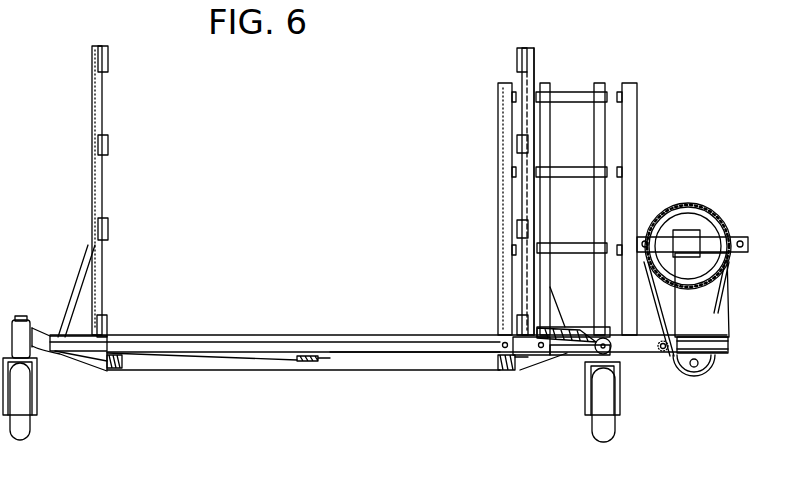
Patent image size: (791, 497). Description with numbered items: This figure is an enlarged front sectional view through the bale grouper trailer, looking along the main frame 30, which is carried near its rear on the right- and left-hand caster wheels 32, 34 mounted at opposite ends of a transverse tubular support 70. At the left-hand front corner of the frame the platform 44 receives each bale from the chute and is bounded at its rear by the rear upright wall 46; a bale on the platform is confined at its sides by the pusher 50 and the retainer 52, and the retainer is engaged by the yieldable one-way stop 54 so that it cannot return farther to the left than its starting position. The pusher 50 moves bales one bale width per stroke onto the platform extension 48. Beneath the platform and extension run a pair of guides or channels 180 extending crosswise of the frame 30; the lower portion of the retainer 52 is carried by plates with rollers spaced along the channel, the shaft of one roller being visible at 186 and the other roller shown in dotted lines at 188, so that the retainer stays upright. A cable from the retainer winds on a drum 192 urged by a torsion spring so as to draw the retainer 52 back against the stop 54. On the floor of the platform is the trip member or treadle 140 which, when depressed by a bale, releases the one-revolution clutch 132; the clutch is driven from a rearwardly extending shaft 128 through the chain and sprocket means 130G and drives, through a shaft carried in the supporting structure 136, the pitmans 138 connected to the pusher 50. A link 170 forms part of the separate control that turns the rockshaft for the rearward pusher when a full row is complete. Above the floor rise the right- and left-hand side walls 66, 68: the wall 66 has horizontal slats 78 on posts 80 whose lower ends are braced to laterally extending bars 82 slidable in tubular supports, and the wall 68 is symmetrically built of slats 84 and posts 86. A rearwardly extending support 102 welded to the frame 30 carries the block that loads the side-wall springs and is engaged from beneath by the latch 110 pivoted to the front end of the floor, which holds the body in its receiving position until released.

The main frame 30 is at (113, 370).
The right-hand caster wheel 32 is at (22, 440).
The left-hand caster wheel 34 is at (607, 433).
The platform means 44 is at (562, 348).
The rear upright wall 46 is at (578, 92).
The platform extension 48 is at (412, 335).
The pusher 50 is at (637, 110).
The retainer 52 is at (498, 97).
The one-way stop 54 is at (517, 146).
The right-hand side wall 66 is at (104, 46).
The left-hand side wall 68 is at (536, 28).
The transverse tubular support 70 is at (95, 373).
The horizontal slats 78 is at (108, 72).
The posts 80 is at (93, 104).
The laterally extending bars 82 is at (70, 345).
The horizontal slats 84 is at (517, 58).
The posts 86 is at (535, 58).
The rearwardly extending support 102 is at (318, 362).
The latch 110 is at (305, 361).
The rearwardly extending shaft 128 is at (700, 364).
The chain and sprocket means 130G is at (722, 283).
The one-revolution clutch 132 is at (688, 212).
The supporting structure 136 is at (715, 320).
The pitmans 138 is at (735, 237).
The treadle 140 is at (573, 330).
The link 170 is at (280, 360).
The guides or channels 180 is at (360, 352).
The roller shaft 186 is at (498, 358).
The roller 188 is at (528, 358).
The drum 192 is at (611, 352).